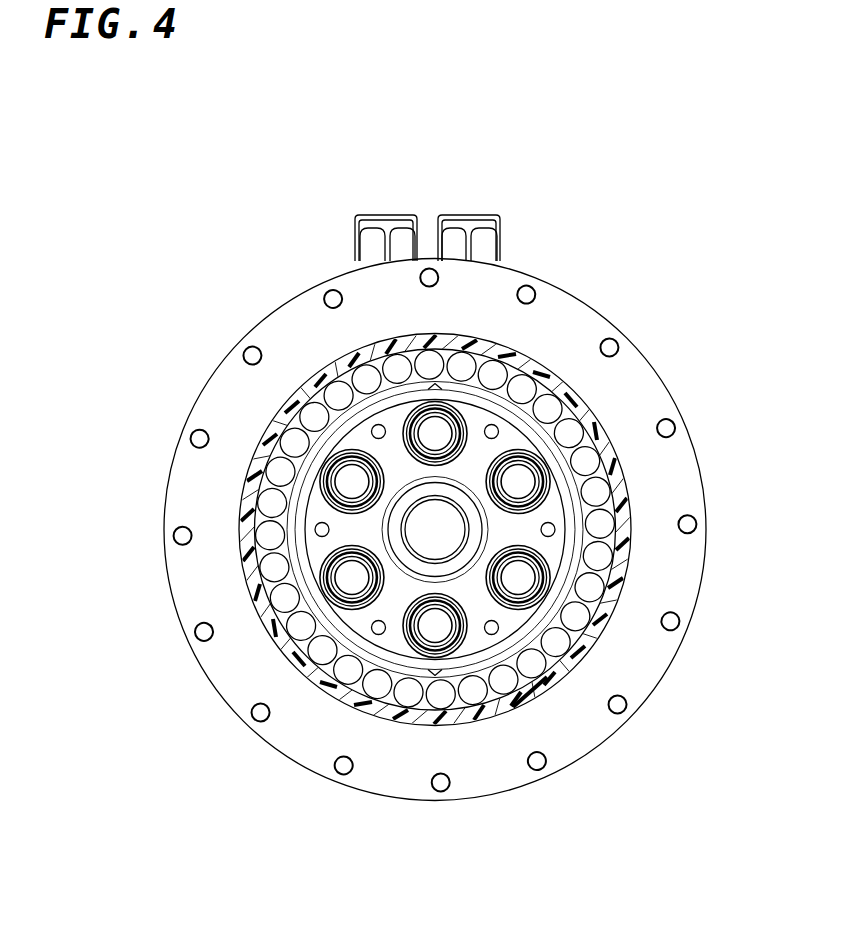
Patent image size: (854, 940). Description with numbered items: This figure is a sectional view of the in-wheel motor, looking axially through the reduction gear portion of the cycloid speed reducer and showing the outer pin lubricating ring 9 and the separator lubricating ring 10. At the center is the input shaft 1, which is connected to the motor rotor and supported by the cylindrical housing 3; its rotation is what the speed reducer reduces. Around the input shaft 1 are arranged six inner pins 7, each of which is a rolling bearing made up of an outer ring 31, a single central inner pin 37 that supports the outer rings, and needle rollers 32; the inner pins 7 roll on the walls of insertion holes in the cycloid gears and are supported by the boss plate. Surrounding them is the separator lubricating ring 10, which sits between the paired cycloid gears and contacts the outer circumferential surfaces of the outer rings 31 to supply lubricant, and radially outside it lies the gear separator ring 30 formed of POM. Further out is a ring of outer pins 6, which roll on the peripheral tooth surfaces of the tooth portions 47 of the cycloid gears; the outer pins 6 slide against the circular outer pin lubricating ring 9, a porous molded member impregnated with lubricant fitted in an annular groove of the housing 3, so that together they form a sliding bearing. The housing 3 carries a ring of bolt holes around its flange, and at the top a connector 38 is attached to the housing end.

The input shaft 1 is at (440, 523).
The housing 3 is at (497, 297).
The outer pins 6 is at (580, 622).
The inner pins 7 is at (259, 638).
The outer pin lubricating ring 9 is at (300, 388).
The separator lubricating ring 10 is at (262, 484).
The gear separator ring 30 is at (618, 477).
The outer ring 31 is at (247, 619).
The needle roller 32 is at (250, 587).
The inner pin 37 is at (350, 587).
The connector 38 is at (462, 223).
The tooth portions 47 is at (556, 686).